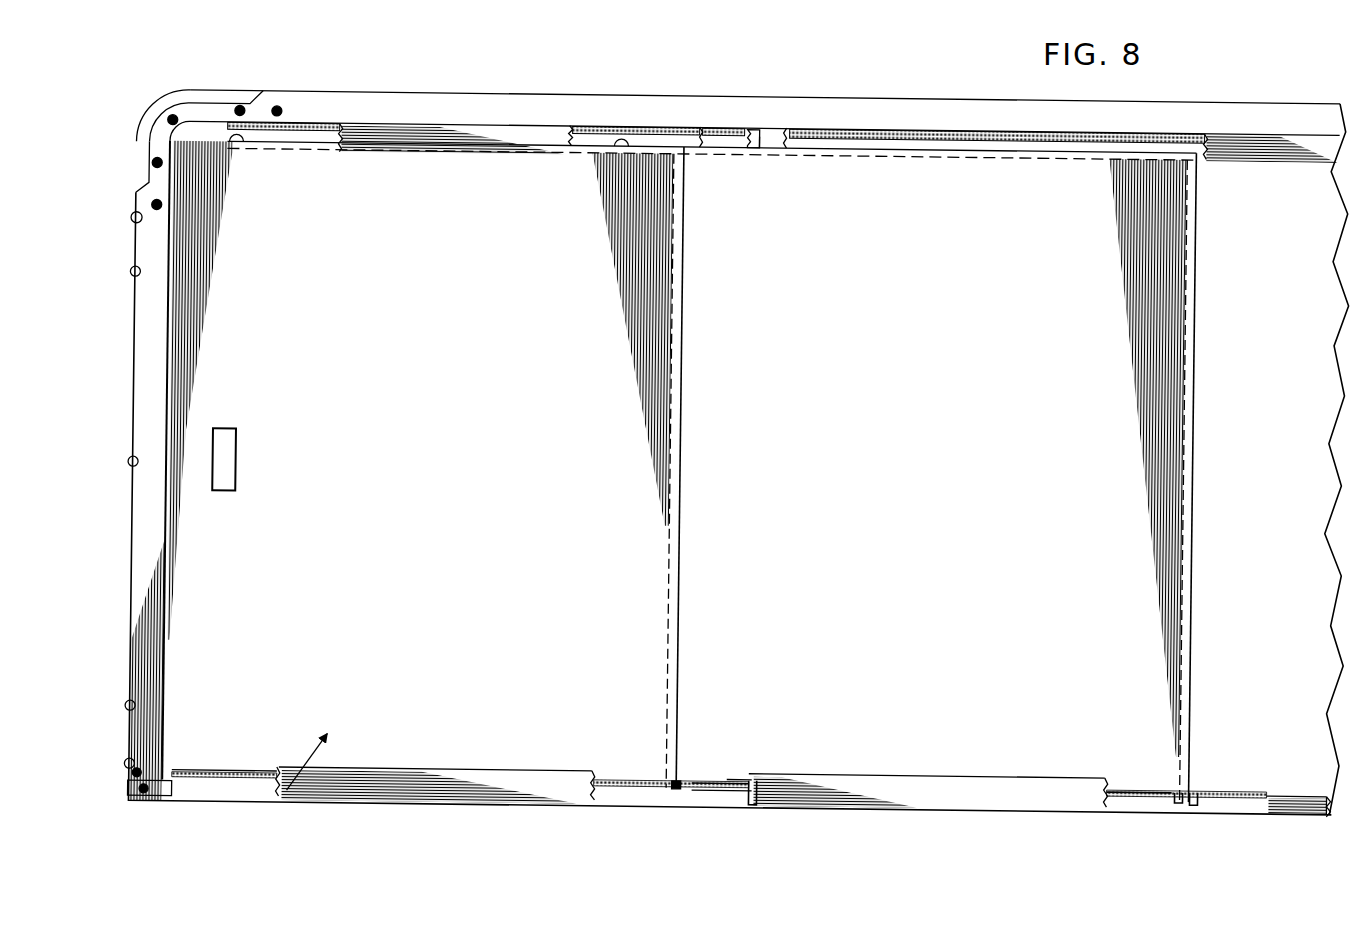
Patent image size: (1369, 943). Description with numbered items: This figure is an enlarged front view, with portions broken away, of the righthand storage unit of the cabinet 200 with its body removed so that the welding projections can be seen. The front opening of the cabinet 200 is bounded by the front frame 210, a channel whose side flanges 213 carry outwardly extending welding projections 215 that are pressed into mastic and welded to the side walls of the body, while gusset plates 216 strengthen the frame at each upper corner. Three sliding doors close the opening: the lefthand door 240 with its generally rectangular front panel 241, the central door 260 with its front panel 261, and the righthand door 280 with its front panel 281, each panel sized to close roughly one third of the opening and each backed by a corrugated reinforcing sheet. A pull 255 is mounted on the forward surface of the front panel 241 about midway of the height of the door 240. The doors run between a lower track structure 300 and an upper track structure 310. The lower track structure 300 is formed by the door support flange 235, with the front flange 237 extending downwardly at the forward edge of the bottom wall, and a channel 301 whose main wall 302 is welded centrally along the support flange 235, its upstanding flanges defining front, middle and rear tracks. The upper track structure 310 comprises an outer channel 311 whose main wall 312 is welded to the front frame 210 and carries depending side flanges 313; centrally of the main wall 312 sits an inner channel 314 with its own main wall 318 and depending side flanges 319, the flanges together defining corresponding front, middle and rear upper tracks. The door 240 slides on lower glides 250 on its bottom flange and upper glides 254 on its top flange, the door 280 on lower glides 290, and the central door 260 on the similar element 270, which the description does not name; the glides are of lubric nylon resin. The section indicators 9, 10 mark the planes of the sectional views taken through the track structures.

The cabinet 200 is at (504, 80).
The front frame 210 is at (901, 95).
The side flanges 213 is at (993, 68).
The welding projections 215 is at (134, 215).
The gusset plates 216 is at (189, 90).
The door support flange 235 is at (233, 777).
The front flange 237 is at (528, 781).
The lefthand door 240 is at (291, 799).
The front panel 241 is at (432, 361).
The lower glides 250 is at (181, 801).
The upper glides 254 is at (237, 143).
The pull 255 is at (231, 457).
The central door 260 is at (951, 731).
The front panel 261 is at (954, 366).
The rail connector 270 is at (695, 781).
The righthand door 280 is at (1308, 719).
The front panel 281 is at (1284, 368).
The lower glides 290 is at (1201, 778).
The lower track structure 300 is at (731, 786).
The channel 301 is at (747, 765).
The main wall 302 is at (725, 774).
The upper track structure 310 is at (579, 112).
The outer channel 311 is at (649, 114).
The main wall 312 is at (300, 121).
The depending side flanges 313 is at (413, 133).
The inner channel 314 is at (753, 144).
The main wall 318 is at (745, 121).
The depending side flanges 319 is at (733, 143).
The section line 9- 9 is at (330, 53).
The section line 10- 10 is at (700, 48).